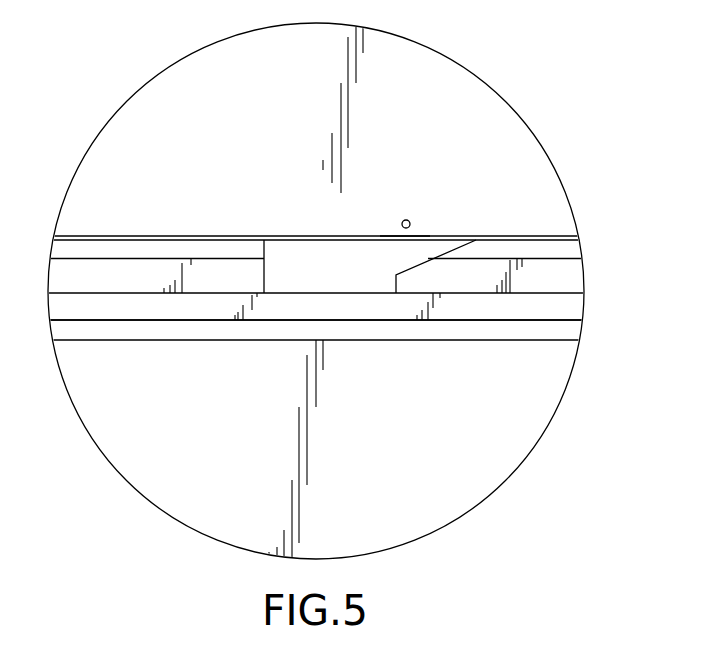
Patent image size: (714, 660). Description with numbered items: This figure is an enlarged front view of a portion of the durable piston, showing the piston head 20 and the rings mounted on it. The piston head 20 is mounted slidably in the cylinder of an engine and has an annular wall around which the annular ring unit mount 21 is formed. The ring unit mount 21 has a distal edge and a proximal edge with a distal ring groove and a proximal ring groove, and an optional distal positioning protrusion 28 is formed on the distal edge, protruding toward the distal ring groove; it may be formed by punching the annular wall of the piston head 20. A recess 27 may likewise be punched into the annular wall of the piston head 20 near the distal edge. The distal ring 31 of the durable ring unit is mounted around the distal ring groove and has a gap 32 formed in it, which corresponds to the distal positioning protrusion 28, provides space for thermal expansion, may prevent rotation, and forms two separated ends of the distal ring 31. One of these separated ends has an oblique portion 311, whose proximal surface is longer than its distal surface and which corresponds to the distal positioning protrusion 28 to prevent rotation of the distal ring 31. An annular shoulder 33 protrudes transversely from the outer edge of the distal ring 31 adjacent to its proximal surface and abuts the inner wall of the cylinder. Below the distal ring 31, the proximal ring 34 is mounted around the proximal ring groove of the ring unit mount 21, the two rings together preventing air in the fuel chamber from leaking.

The piston head 20 is at (518, 435).
The ring unit mount 21 is at (139, 241).
The recess 27 is at (408, 220).
The distal positioning protrusion 28 is at (406, 238).
The distal ring 31 is at (571, 277).
The oblique portion 311 is at (442, 253).
The gap 32 is at (304, 257).
The shoulder 33 is at (503, 256).
The proximal ring 34 is at (208, 312).